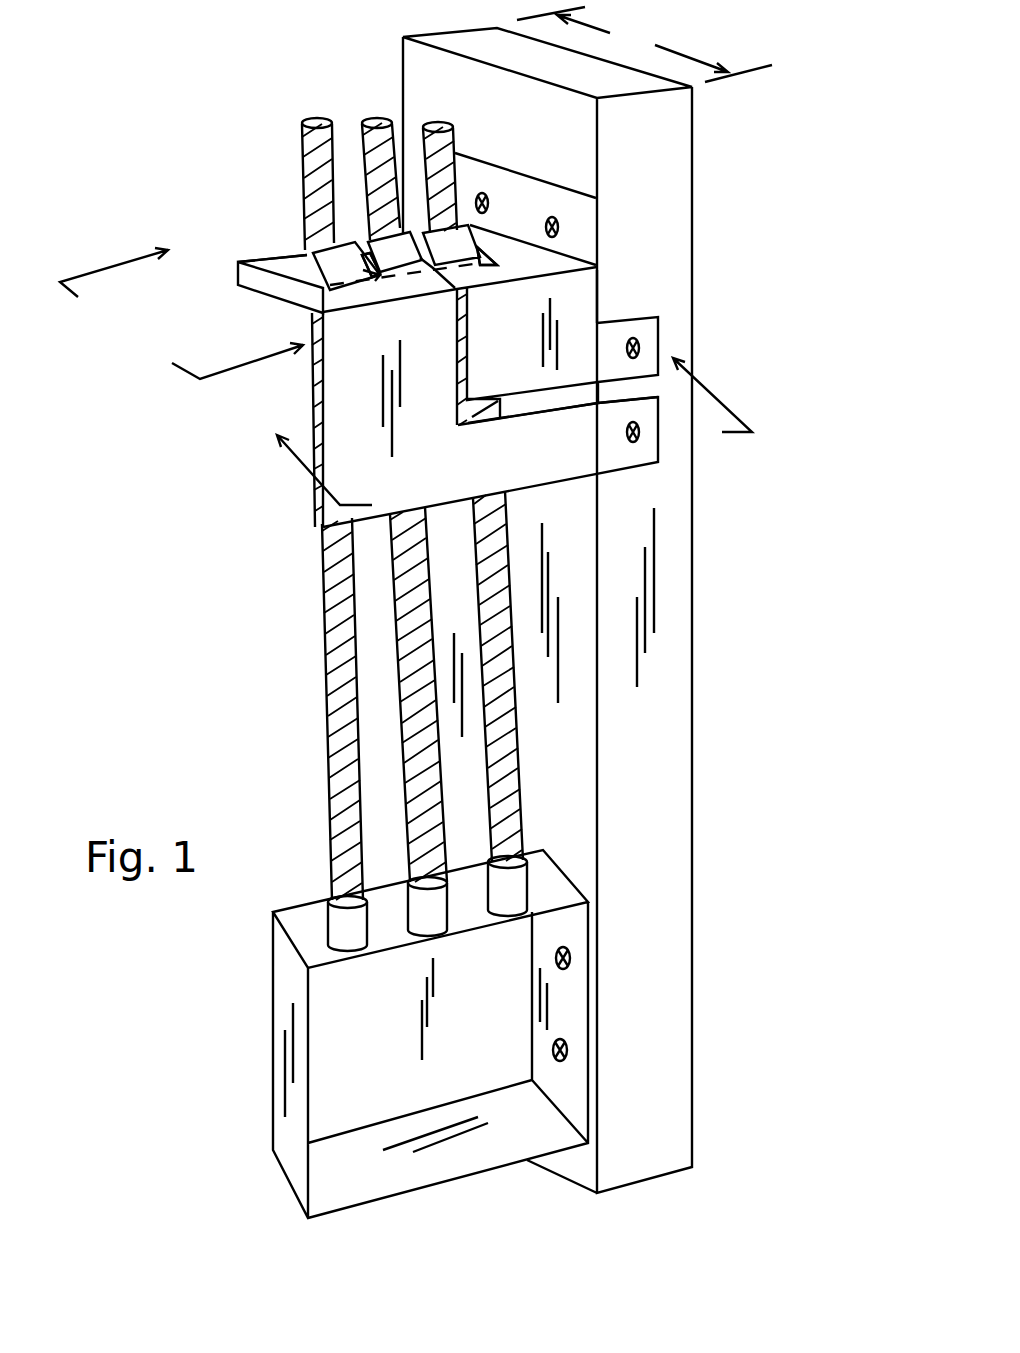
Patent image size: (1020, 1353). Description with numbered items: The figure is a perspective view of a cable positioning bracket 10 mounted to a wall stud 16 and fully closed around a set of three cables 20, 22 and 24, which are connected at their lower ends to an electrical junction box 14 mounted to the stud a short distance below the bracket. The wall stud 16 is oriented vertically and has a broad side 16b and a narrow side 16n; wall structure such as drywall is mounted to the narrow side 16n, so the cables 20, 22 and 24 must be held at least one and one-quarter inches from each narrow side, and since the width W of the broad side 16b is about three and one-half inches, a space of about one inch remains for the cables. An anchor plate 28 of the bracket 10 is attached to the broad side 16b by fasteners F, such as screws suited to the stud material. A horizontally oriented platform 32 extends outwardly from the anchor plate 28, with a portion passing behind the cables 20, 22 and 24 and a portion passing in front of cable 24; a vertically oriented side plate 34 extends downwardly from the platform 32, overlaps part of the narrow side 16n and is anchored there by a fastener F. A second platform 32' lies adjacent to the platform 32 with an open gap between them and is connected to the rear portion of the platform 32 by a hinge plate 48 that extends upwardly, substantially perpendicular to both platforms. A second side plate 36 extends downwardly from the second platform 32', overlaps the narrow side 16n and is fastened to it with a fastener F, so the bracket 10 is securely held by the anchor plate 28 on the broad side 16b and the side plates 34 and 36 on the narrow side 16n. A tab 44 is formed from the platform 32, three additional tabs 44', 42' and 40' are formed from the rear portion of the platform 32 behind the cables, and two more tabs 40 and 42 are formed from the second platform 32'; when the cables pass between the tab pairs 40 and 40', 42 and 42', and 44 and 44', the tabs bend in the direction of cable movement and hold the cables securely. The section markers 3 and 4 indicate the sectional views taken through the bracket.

The cable positioning bracket 10 is at (230, 503).
The electrical junction box 14 is at (388, 1058).
The wall stud 16 is at (693, 745).
The broad side 16b is at (583, 778).
The narrow side 16n is at (682, 848).
The cable 20 is at (325, 808).
The cable 22 is at (407, 813).
The cable 24 is at (487, 825).
The anchor plate 28 is at (583, 226).
The platform 32 is at (498, 271).
The second platform 32' is at (388, 408).
The side plate 34 is at (525, 349).
The second side plate 36 is at (462, 466).
The tab 40 is at (322, 236).
The tab 40' is at (267, 214).
The tab 42 is at (385, 175).
The tab 42' is at (346, 169).
The tab 44 is at (472, 188).
The tab 44' is at (451, 171).
The hinge plate 48 is at (292, 298).
The fastener F is at (645, 432).
The width W is at (644, 44).
The section line 3 is at (517, 431).
The section line 4 is at (181, 325).